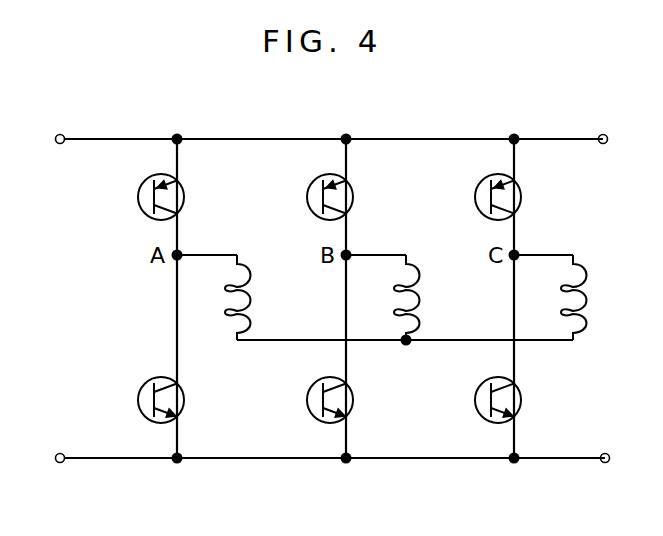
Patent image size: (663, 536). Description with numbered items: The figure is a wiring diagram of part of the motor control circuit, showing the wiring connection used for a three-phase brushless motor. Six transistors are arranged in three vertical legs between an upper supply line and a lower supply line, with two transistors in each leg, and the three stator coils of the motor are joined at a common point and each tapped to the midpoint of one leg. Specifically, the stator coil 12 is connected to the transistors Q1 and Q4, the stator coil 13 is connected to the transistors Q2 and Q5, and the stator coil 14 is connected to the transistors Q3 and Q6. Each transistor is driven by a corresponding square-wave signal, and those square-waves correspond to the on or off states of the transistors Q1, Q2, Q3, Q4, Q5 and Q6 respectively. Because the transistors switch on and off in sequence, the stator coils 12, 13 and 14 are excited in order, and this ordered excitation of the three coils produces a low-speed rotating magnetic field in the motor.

The stator coil 12 is at (252, 305).
The stator coil 13 is at (420, 305).
The stator coil 14 is at (588, 305).
The transistor Q1 is at (135, 192).
The transistor Q2 is at (303, 192).
The transistor Q3 is at (471, 192).
The transistor Q4 is at (135, 400).
The transistor Q5 is at (303, 400).
The transistor Q6 is at (471, 400).